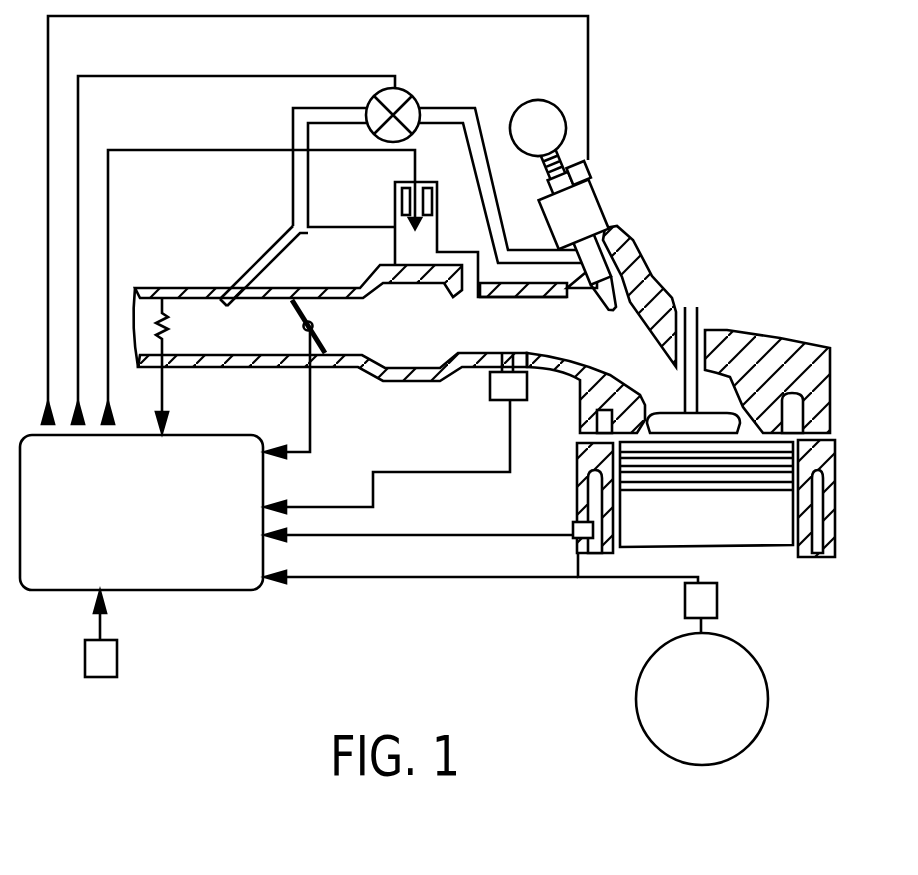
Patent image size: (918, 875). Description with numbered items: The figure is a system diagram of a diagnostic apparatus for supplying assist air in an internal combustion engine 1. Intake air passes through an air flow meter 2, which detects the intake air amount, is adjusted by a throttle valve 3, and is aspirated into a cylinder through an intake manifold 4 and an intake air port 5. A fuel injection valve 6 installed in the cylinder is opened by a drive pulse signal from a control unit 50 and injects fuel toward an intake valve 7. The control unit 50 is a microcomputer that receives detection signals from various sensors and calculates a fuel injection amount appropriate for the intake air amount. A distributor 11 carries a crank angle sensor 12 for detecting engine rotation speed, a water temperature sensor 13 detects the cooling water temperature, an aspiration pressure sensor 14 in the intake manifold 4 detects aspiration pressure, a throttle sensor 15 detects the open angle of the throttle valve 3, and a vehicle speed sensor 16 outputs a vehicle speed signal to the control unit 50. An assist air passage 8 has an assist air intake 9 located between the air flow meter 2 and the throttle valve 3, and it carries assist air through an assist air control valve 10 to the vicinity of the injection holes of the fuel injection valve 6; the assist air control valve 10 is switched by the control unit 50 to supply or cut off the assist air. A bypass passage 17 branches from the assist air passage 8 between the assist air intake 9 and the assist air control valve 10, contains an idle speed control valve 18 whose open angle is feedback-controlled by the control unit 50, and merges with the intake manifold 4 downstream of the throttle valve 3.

The internal combustion engine 1 is at (757, 233).
The air flow meter 2 is at (165, 305).
The throttle valve 3 is at (326, 350).
The intake manifold 4 is at (400, 366).
The intake air port 5 is at (585, 348).
The fuel injection valve 6 is at (604, 206).
The intake valve 7 is at (698, 325).
The assist air passage 8 is at (538, 258).
The assist air intake 9 is at (248, 283).
The assist air control valve 10 is at (420, 104).
The distributor 11 is at (765, 650).
The crank angle sensor 12 is at (683, 598).
The water temperature sensor 13 is at (573, 525).
The aspiration pressure sensor 14 is at (490, 387).
The throttle sensor 15 is at (301, 322).
The vehicle speed sensor 16 is at (87, 665).
The bypass passage 17 is at (338, 224).
The idle speed control valve 18 is at (432, 178).
The control unit 50 is at (220, 591).